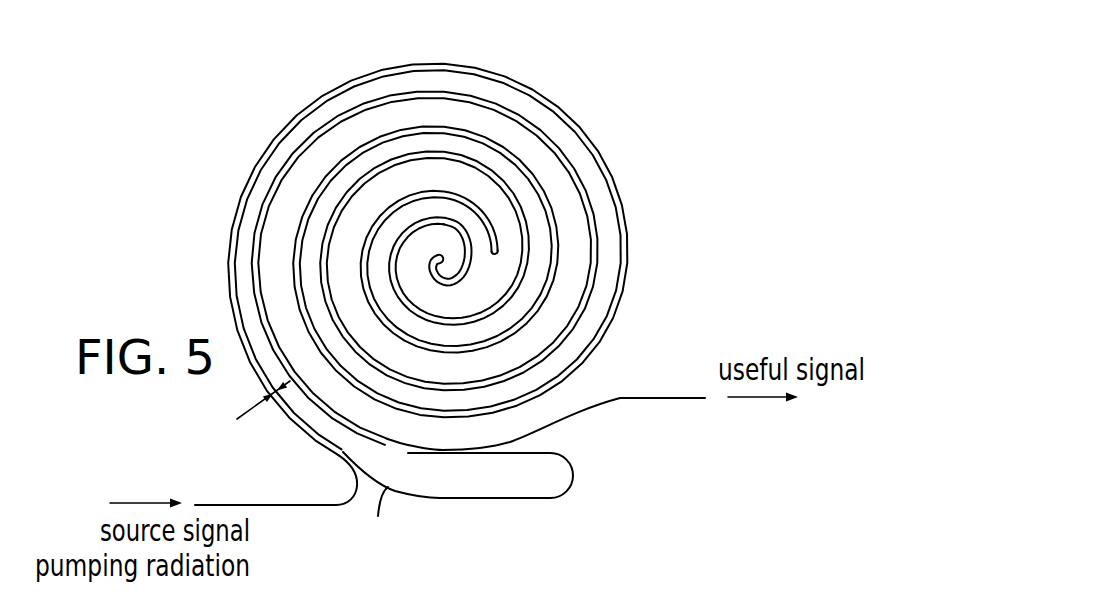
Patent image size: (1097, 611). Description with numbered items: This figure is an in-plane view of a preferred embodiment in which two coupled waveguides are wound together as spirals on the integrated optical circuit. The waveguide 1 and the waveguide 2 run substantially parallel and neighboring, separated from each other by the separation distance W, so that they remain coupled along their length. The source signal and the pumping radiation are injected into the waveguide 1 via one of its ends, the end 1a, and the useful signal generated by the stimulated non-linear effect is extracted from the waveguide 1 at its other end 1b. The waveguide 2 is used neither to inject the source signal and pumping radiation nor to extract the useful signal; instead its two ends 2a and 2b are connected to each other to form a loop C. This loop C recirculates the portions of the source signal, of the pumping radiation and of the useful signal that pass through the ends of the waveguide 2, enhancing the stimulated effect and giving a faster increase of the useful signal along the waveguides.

The waveguide 1 is at (532, 172).
The waveguide 2 is at (555, 223).
The end of waveguide 1 1a is at (344, 457).
The end of waveguide 1 1b is at (657, 398).
The end of waveguide 2 2a is at (379, 521).
The end of waveguide 2 2b is at (408, 453).
The loop C is at (567, 487).
The separation distance W is at (251, 401).